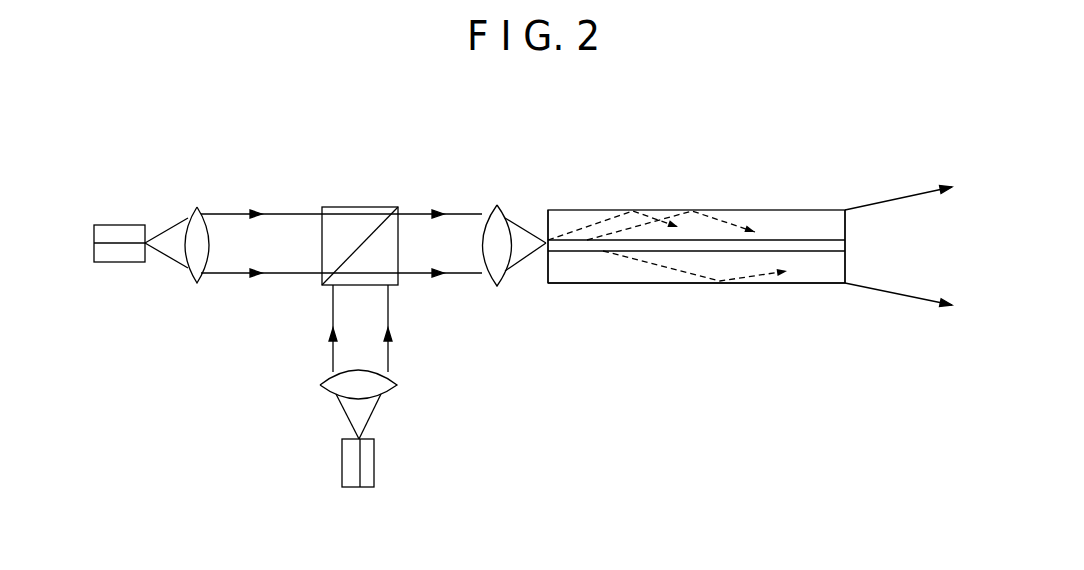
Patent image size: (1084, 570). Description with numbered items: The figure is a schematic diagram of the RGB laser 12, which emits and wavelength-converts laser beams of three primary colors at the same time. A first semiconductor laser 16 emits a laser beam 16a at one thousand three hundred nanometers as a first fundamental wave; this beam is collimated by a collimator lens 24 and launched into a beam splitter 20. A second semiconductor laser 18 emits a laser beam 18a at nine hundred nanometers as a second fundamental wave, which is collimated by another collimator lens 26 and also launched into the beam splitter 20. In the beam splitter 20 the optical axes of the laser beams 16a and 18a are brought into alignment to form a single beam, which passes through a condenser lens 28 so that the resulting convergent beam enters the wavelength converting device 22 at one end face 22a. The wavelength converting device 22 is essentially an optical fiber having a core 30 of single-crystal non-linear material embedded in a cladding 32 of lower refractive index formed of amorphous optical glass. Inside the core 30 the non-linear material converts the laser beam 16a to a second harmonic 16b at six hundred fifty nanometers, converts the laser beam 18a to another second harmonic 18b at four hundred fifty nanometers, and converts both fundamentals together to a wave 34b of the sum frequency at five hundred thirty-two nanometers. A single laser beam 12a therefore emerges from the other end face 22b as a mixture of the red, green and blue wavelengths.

The RGB laser 12 is at (720, 304).
The laser beam 12a is at (888, 292).
The first semiconductor laser 16 is at (120, 225).
The laser beam 16a is at (287, 212).
The second harmonic 16b is at (654, 267).
The second semiconductor laser 18 is at (352, 468).
The laser beam 18a is at (333, 347).
The second harmonic 18b is at (605, 218).
The beam splitter 20 is at (360, 207).
The wavelength converting device 22 is at (720, 302).
The end face 22a is at (545, 253).
The end face 22b is at (847, 235).
The collimator lens 24 is at (197, 207).
The collimator lens 26 is at (320, 390).
The condenser lens 28 is at (497, 205).
The core 30 is at (562, 245).
The cladding 32 is at (753, 265).
The wave of the sum frequency 34b is at (719, 215).